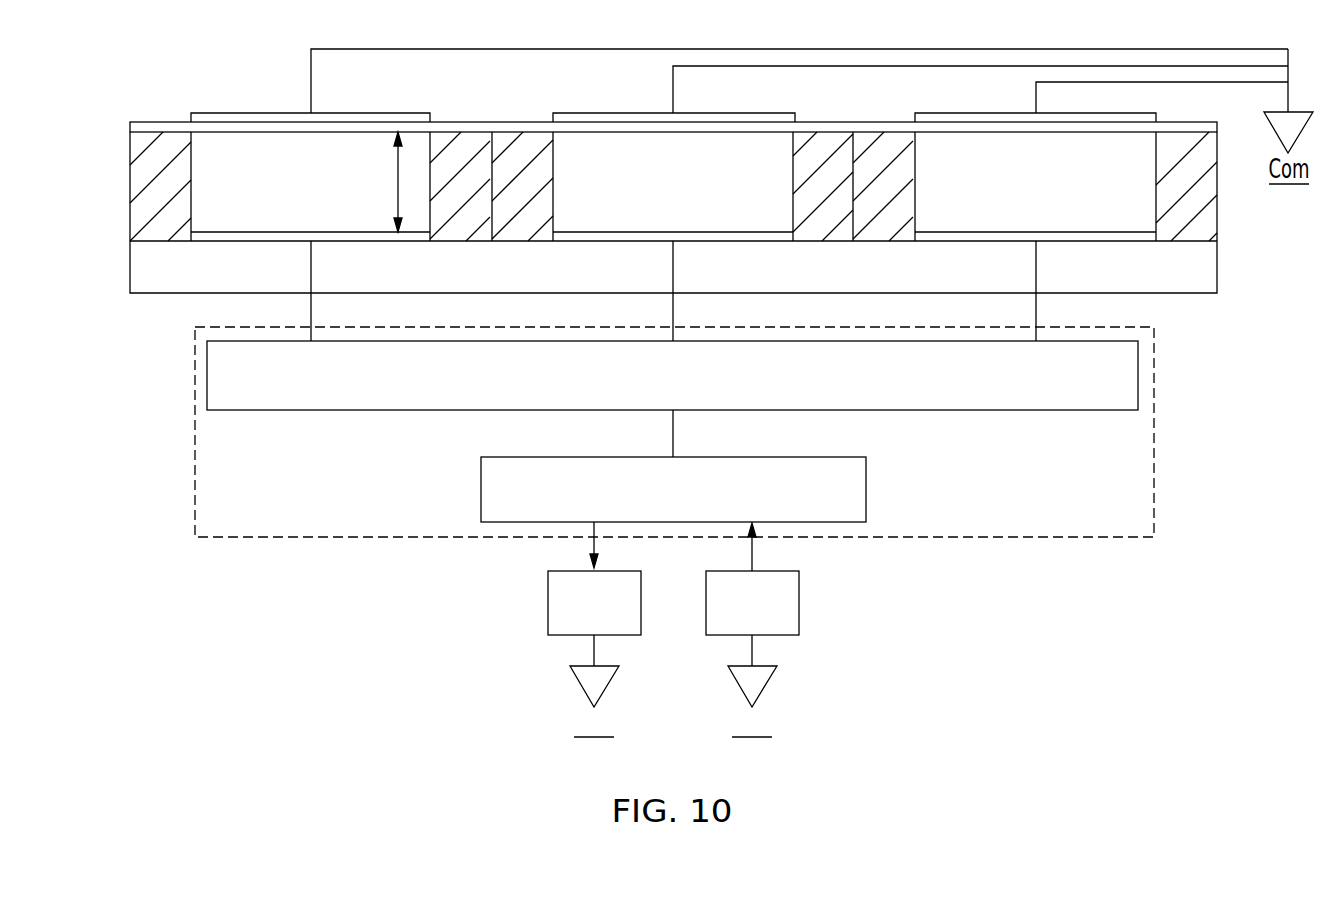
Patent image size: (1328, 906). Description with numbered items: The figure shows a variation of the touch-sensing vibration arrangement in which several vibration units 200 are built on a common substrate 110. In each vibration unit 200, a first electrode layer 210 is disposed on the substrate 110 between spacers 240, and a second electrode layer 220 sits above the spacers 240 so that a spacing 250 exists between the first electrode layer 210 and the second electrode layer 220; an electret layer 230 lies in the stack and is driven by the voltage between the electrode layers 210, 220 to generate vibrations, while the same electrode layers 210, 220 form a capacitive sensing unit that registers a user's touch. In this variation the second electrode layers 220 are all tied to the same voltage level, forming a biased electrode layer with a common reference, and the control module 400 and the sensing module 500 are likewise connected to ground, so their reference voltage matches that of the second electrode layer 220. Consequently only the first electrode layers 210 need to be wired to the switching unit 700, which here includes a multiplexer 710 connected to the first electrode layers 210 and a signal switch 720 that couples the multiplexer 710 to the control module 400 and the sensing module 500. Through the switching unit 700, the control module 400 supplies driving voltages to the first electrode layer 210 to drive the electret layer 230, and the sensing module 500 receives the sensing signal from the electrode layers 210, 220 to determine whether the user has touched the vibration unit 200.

The substrate 110 is at (212, 282).
The vibration unit 200 is at (250, 113).
The first electrode layer 210 is at (210, 236).
The second electrode layer 220 is at (190, 117).
The electret layer 230 is at (142, 127).
The spacers 240 is at (153, 178).
The spacing 250 is at (378, 182).
The control module 400 is at (733, 616).
The sensing module 500 is at (575, 616).
The switching unit 700 is at (1154, 430).
The multiplexer 710 is at (689, 392).
The signal switch 720 is at (689, 506).